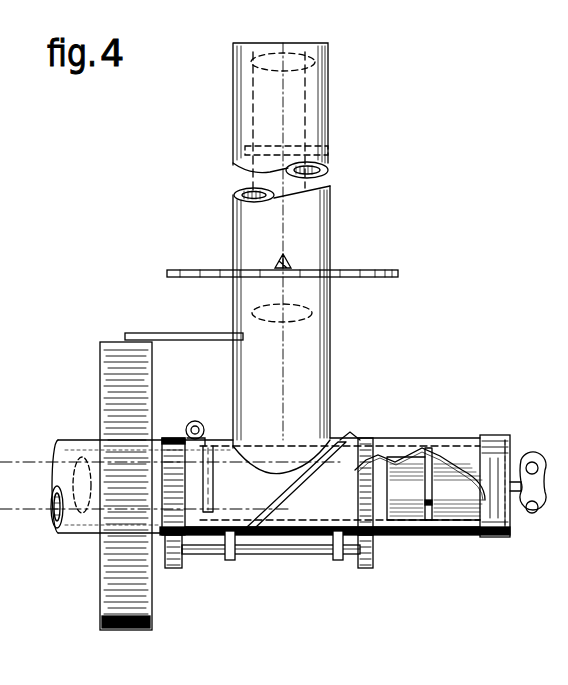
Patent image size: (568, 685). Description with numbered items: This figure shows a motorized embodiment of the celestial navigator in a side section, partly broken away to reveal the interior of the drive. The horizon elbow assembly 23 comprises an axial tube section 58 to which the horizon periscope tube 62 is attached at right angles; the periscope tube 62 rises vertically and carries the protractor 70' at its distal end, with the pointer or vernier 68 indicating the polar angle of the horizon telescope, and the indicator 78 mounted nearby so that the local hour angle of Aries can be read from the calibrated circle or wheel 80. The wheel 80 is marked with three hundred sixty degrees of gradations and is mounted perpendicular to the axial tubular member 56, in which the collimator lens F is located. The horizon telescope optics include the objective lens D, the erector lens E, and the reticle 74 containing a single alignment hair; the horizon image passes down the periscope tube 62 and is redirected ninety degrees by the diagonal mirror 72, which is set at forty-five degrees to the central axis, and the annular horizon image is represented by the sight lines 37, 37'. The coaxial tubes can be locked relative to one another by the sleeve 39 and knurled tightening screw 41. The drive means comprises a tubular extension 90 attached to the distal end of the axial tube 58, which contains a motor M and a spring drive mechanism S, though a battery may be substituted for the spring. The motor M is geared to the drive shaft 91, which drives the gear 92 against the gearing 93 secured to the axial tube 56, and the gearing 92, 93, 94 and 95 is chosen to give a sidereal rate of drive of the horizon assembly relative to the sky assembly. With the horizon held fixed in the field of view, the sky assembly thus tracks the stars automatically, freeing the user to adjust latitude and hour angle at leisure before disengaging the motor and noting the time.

The objective lens D is at (316, 70).
The reticle 74 is at (322, 152).
The horizon periscope tube 62 is at (312, 358).
The erector lens E is at (310, 314).
The pointer or vernier 68 is at (293, 262).
The protractor 70' is at (251, 255).
The indicator 78 is at (165, 336).
The calibrated circle or wheel 80 is at (112, 386).
The axial tubular member 56 is at (88, 446).
The sight line 37' is at (170, 452).
The sight line 37 is at (45, 544).
The collimator lens F is at (82, 485).
The gearing 93 is at (170, 438).
The gear 92 is at (178, 568).
The knurled tightening screw 41 is at (198, 421).
The diagonal mirror 72 is at (290, 548).
The axial tube section 58 is at (340, 440).
The drive shaft 91 is at (262, 554).
The sleeve 39 is at (208, 548).
The gearing 95 is at (385, 540).
The gearing 94 is at (372, 566).
The tubular extension 90 is at (405, 448).
The motor M is at (403, 487).
The spring drive mechanism S is at (457, 487).
The horizon elbow assembly 23 is at (404, 376).